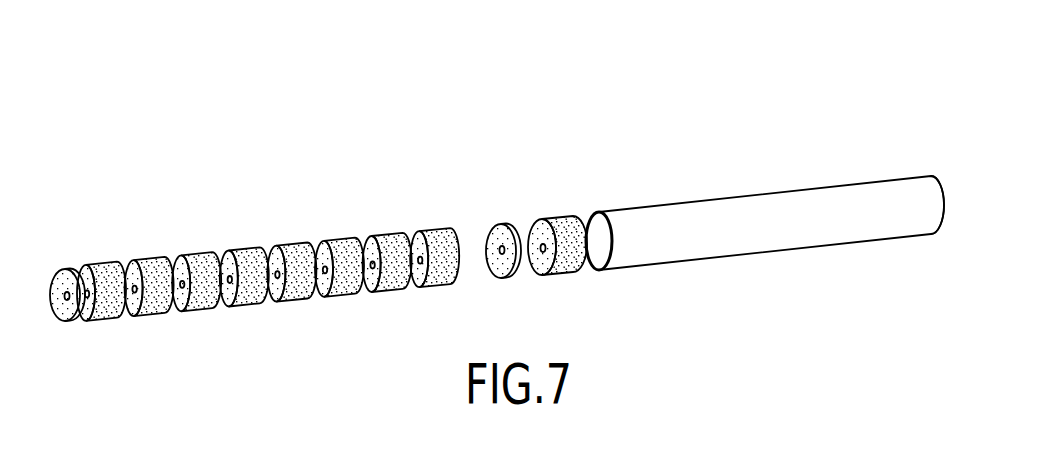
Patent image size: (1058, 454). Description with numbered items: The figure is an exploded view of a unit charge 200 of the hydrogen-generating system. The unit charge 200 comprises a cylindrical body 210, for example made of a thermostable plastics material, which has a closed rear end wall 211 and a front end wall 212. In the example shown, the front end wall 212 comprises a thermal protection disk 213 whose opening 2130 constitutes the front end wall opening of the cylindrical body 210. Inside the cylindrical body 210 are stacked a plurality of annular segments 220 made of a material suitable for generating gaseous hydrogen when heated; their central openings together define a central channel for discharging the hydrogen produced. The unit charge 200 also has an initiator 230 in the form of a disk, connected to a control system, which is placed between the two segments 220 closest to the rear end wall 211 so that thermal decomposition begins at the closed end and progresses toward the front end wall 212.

The unit charge 200 is at (323, 215).
The cylindrical body 210 is at (756, 225).
The rear end wall 211 is at (938, 182).
The front end wall 212 is at (592, 273).
The thermal protection disk 213 is at (68, 309).
The opening 2130 is at (66, 291).
The annular segments 220 is at (248, 315).
The initiator 230 is at (495, 224).